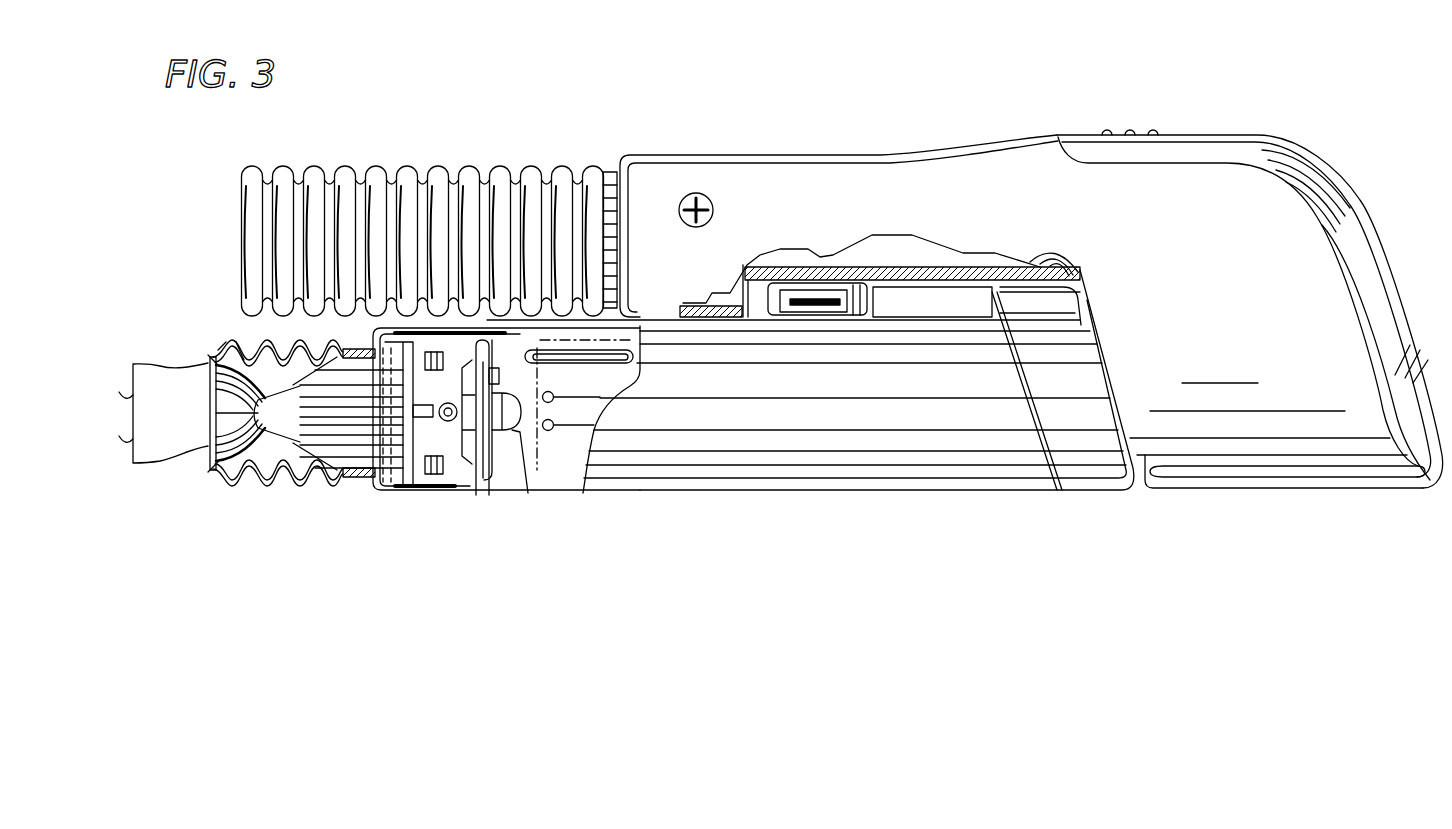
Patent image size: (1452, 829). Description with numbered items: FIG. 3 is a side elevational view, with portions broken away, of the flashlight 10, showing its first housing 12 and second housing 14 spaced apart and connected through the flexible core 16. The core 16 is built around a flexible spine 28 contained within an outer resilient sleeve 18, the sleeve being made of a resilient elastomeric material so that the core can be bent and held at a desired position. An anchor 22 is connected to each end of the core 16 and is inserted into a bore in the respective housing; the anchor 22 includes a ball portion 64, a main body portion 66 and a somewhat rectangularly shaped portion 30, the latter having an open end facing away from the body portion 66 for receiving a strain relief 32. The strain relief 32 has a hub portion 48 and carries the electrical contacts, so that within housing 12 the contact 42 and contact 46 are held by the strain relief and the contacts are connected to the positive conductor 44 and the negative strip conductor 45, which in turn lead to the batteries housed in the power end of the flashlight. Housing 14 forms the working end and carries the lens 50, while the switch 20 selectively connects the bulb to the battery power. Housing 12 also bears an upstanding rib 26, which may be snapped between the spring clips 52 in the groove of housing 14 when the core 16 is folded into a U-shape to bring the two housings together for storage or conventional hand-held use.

The flashlight 10 is at (899, 513).
The first housing 12 is at (747, 495).
The second housing 14 is at (1265, 465).
The flexible core 16 is at (473, 158).
The outer resilient sleeve 18 is at (345, 178).
The switch 20 is at (1130, 128).
The anchor 22 is at (352, 478).
The upstanding rib 26 is at (915, 303).
The flexible spine 28 is at (200, 446).
The rectangularly shaped portion 30 is at (472, 470).
The strain relief 32 is at (466, 362).
The contact 42 is at (485, 482).
The positive conductor 44 is at (513, 432).
The negative strip conductor 45 is at (560, 490).
The contact 46 is at (486, 379).
The hub portion 48 is at (446, 421).
The lens 50 is at (1318, 180).
The spring clips 52 is at (812, 290).
The ball portion 64 is at (222, 352).
The main body portion 66 is at (218, 468).